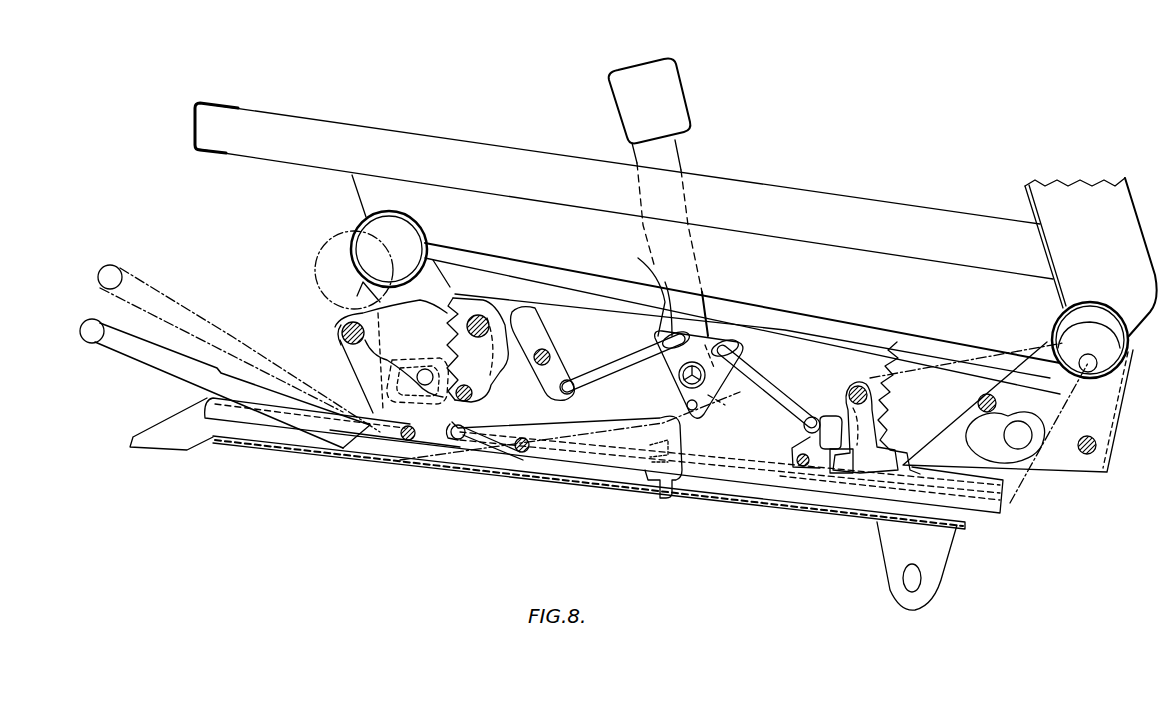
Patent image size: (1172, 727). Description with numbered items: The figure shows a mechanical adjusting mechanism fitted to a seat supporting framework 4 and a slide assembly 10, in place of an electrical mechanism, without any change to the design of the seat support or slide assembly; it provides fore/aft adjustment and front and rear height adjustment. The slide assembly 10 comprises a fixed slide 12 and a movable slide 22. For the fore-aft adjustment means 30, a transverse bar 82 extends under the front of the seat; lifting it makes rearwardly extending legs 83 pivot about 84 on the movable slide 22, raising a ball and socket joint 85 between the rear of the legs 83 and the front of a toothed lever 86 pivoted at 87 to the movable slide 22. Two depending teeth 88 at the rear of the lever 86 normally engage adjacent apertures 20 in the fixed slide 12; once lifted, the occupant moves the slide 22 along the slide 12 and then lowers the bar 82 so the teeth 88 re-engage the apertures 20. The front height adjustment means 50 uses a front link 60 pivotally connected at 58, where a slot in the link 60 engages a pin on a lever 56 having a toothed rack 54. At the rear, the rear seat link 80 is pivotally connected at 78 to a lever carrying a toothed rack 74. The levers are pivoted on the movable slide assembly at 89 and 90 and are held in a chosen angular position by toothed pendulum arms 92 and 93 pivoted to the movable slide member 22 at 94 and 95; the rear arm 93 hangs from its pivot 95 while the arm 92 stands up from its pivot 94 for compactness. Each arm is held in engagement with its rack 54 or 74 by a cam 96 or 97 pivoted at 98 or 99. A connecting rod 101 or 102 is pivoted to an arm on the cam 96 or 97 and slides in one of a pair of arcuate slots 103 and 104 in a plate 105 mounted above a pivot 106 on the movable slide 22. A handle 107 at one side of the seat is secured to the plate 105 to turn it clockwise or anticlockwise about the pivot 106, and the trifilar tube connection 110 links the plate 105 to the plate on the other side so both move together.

The seat supporting framework 4 is at (323, 131).
The handle 107 is at (668, 74).
The front height adjustment means 50 is at (310, 258).
The lever 56 is at (434, 305).
The toothed rack 54 is at (495, 295).
The toothed pendulum arm 92 is at (497, 312).
The arcuate slot 103 is at (656, 276).
The arcuate slot 104 is at (728, 336).
The cam 96 is at (546, 346).
The cam pivot 98 is at (552, 360).
The connecting rod 102 is at (763, 390).
The pendulum arm pivot 95 is at (856, 388).
The toothed pendulum arm 93 is at (845, 405).
The toothed rack 74 is at (907, 383).
The lever pivot 90 is at (990, 392).
The rear seat link 80 is at (1110, 395).
The pivotal connection 78 is at (1100, 453).
The slide assembly 10 is at (222, 440).
The fixed slide 12 is at (252, 440).
The apertures 20 is at (320, 460).
The rearwardly extending legs 83 is at (338, 432).
The leg pivot 84 is at (407, 442).
The pivotal connection 58 is at (426, 388).
The ball and socket joint 85 is at (470, 440).
The lever pivot 87 is at (523, 455).
The fore-aft adjustment means 30 is at (590, 508).
The toothed lever 86 is at (633, 470).
The depending teeth 88 is at (643, 495).
The cam pivot 99 is at (800, 467).
The cam 97 is at (818, 477).
The connecting rod 101 is at (617, 373).
The trifilar tube connection 110 is at (680, 384).
The plate 105 is at (698, 397).
The plate pivot 106 is at (694, 410).
The lever pivot 89 is at (340, 333).
The movable slide 22 is at (348, 366).
The front link 60 is at (385, 387).
The transverse bar 82 is at (97, 345).
The pendulum arm pivot 94 is at (472, 400).